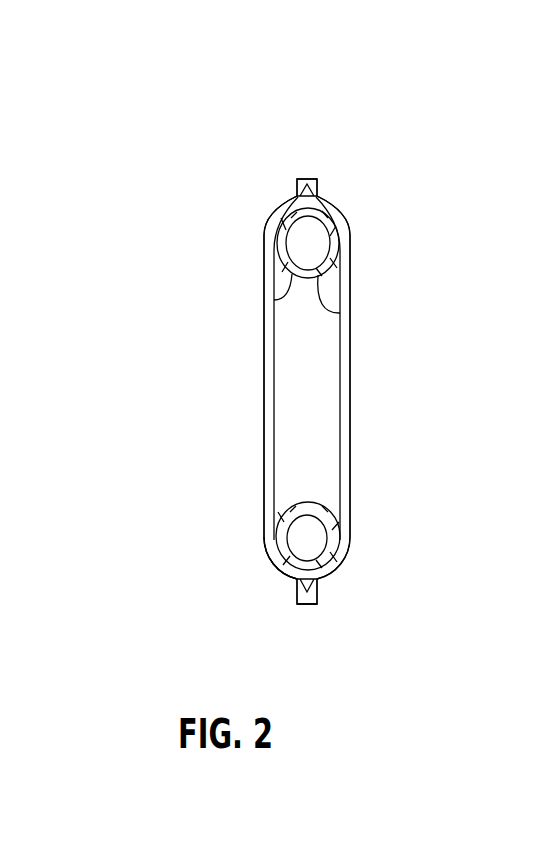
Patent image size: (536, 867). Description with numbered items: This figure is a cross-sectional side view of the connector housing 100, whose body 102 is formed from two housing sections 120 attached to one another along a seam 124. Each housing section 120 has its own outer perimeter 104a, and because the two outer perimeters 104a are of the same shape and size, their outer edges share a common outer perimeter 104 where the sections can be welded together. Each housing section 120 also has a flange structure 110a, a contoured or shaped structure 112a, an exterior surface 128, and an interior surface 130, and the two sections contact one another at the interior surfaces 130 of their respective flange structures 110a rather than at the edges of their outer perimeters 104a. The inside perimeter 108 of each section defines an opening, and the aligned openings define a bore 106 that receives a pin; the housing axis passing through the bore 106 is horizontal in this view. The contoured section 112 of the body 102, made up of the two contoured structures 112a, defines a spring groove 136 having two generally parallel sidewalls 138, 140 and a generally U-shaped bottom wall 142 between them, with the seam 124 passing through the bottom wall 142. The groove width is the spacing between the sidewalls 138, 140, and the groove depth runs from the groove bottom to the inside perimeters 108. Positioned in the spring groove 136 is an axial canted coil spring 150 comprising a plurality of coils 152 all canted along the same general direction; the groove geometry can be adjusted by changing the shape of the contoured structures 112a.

The connector housing 100 is at (156, 58).
The body 102 is at (262, 218).
The outer perimeter 104 is at (317, 179).
The outer perimeter of housing section 104a is at (478, 151).
The bore 106 is at (300, 380).
The inside perimeter 108 is at (270, 510).
The flange structure 110a is at (453, 637).
The contoured section 112 is at (467, 587).
The contoured structure 112a is at (505, 242).
The housing section 120 is at (454, 190).
The seam 124 is at (355, 688).
The exterior surface 128 is at (265, 235).
The interior surface 130 is at (282, 300).
The spring groove 136 is at (305, 537).
The first sidewall 138 is at (266, 532).
The second sidewall 140 is at (360, 529).
The bottom wall 142 is at (270, 577).
The canted coil spring 150 is at (322, 314).
The coils 152 is at (327, 288).